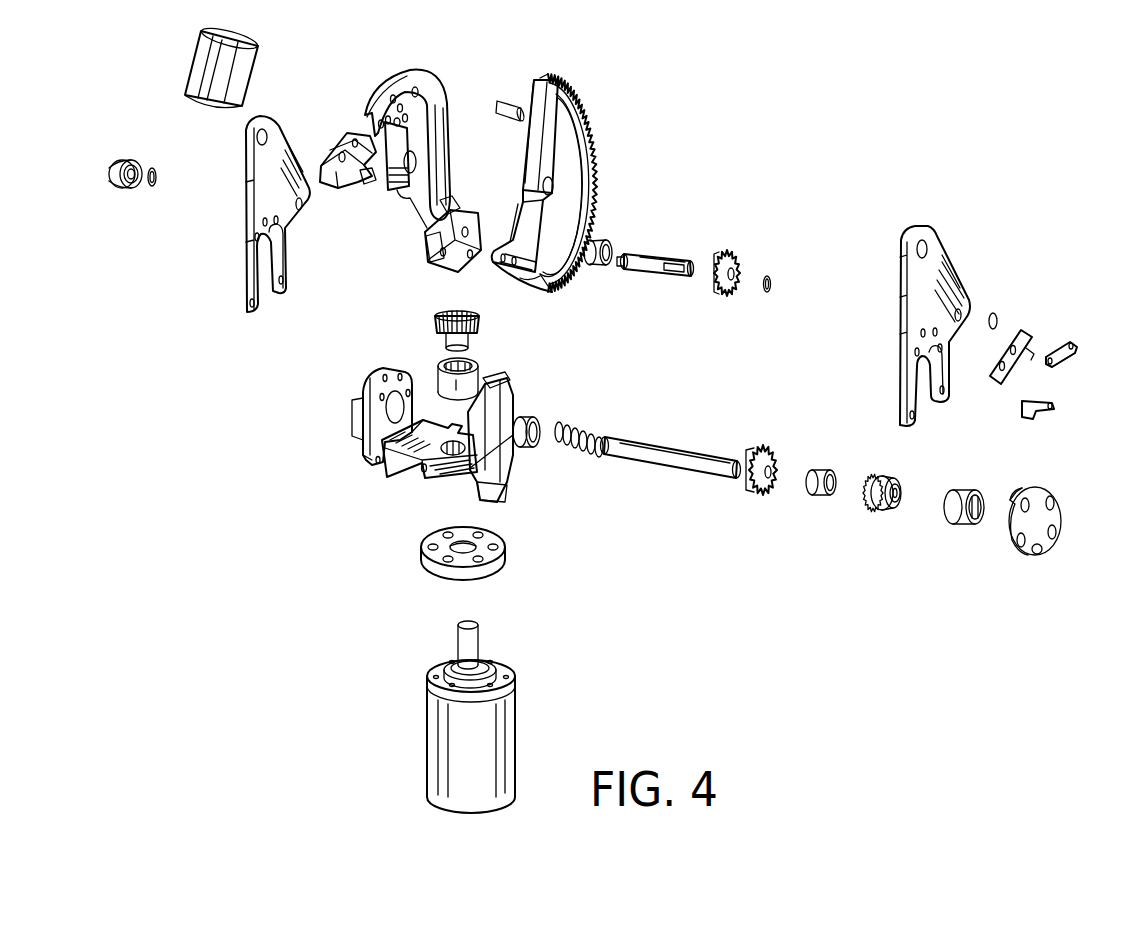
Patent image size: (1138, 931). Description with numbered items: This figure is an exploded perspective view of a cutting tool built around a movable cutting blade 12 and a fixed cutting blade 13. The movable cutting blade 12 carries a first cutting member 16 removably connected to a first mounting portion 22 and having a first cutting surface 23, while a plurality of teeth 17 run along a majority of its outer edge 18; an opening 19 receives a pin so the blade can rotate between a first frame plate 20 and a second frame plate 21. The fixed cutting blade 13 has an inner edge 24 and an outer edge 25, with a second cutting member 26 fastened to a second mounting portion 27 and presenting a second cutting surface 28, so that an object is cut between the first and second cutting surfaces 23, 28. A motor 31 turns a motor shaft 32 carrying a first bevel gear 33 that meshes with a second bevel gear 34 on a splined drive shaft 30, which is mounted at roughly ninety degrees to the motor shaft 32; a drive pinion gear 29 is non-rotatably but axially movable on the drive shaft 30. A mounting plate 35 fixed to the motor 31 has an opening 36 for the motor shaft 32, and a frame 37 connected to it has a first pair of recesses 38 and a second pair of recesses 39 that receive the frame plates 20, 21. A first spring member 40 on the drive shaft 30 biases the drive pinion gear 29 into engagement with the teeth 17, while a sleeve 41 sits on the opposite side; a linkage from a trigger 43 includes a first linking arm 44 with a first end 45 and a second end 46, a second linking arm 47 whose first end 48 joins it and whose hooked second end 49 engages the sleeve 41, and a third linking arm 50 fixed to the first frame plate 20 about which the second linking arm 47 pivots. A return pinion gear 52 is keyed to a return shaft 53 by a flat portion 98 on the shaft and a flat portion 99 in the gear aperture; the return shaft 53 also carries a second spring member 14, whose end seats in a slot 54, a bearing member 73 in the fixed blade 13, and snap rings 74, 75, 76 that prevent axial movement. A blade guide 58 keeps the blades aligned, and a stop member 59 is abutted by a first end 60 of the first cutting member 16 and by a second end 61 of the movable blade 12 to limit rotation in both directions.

The movable cutting blade 12 is at (555, 74).
The fixed cutting blade 13 is at (422, 66).
The second spring member 14 is at (112, 162).
The first cutting member 16 is at (454, 274).
The plurality of teeth 17 is at (597, 128).
The outer edge 18 is at (544, 290).
The opening 19 is at (552, 185).
The first frame plate 20 is at (944, 258).
The second frame plate 21 is at (238, 238).
The first mounting portion 22 is at (523, 266).
The first cutting surface 23 is at (456, 208).
The inner edge 24 is at (397, 73).
The outer edge 25 is at (393, 190).
The second cutting member 26 is at (337, 142).
The second mounting portion 27 is at (395, 124).
The second cutting surface 28 is at (360, 186).
The drive pinion gear 29 is at (757, 494).
The drive shaft 30 is at (652, 464).
The motor 31 is at (427, 740).
The motor shaft 32 is at (479, 644).
The first bevel gear 33 is at (443, 340).
The second bevel gear 34 is at (884, 514).
The mounting plate 35 is at (477, 572).
The opening 36 is at (484, 540).
The frame 37 is at (400, 478).
The first pair of recesses 38 is at (427, 478).
The second pair of recesses 39 is at (380, 474).
The first spring member 40 is at (578, 428).
The sleeve 41 is at (821, 470).
The trigger 43 is at (512, 480).
The first linking arm 44 is at (1067, 360).
The first end 45 is at (1073, 340).
The second end 46 is at (1049, 357).
The second linking arm 47 is at (1038, 412).
The first end 48 is at (1055, 404).
The second end 49 is at (1026, 417).
The third linking arm 50 is at (1020, 330).
The return pinion gear 52 is at (731, 260).
The return shaft 53 is at (658, 256).
The slot 54 is at (626, 266).
The blade guide 58 is at (193, 52).
The stop member 59 is at (503, 100).
The first end 60 is at (428, 242).
The second end 61 is at (541, 100).
The bearing member 73 is at (597, 240).
The first snap ring 74 is at (990, 326).
The second snap ring 75 is at (770, 290).
The third snap ring 76 is at (158, 180).
The flat portion 98 is at (673, 274).
The flat portion 99 is at (736, 276).